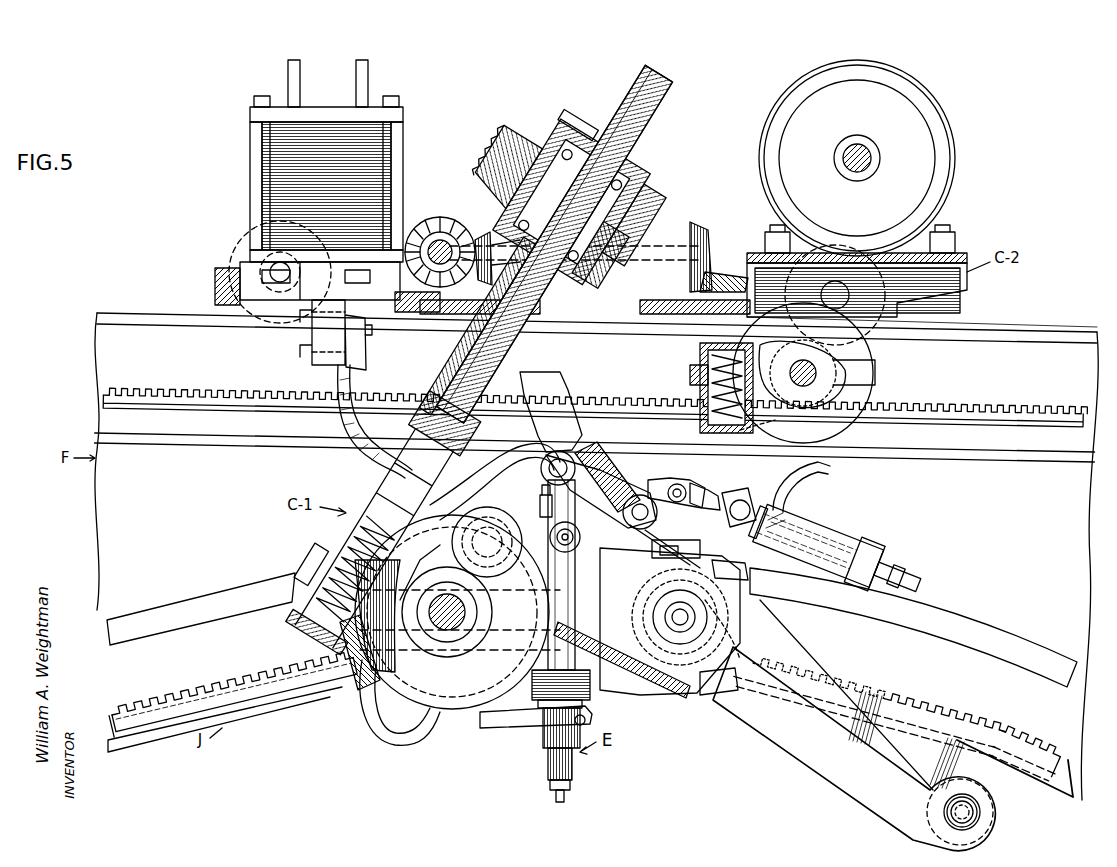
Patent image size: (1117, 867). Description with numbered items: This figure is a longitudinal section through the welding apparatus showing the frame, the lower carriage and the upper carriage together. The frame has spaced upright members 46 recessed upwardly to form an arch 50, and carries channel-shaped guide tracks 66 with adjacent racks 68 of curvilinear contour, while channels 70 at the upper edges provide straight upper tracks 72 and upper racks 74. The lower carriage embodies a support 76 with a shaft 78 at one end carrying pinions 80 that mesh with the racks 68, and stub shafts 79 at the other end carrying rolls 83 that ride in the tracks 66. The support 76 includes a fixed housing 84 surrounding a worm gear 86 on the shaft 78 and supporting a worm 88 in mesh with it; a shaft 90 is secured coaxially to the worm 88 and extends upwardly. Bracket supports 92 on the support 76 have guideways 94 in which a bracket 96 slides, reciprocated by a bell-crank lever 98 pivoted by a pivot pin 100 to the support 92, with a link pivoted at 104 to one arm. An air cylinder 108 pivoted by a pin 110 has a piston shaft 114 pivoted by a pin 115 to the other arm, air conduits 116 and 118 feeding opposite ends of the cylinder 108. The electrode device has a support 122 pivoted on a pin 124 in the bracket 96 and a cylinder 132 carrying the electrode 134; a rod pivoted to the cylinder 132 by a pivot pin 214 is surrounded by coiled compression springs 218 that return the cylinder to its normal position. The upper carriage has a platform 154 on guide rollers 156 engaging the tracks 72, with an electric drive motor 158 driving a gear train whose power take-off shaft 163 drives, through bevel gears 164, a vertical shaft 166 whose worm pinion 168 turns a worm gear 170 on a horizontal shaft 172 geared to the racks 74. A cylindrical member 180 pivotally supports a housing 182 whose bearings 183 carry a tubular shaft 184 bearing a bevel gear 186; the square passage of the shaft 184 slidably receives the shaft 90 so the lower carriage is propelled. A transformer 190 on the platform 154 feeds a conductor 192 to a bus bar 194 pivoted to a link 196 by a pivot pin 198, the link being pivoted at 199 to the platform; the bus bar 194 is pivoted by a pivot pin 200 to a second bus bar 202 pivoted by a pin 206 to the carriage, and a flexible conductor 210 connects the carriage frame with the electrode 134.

The upright members 46 is at (1092, 468).
The arch 50 is at (262, 712).
The channel-shaped guide tracks 66 is at (195, 616).
The racks 68 is at (975, 722).
The channels 70 is at (115, 362).
The upper tracks 72 is at (1024, 333).
The upper racks 74 is at (956, 404).
The support 76 is at (780, 632).
The shaft 78 is at (445, 660).
The stub shafts 79 is at (740, 600).
The pinions 80 is at (456, 560).
The rolls 83 is at (742, 628).
The fixed housing 84 is at (325, 696).
The worm gear 86 is at (340, 641).
The worm 88 is at (318, 575).
The shaft 90 is at (455, 365).
The bracket supports 92 is at (740, 565).
The guideways 94 is at (660, 538).
The bracket 96 is at (548, 624).
The bell-crank lever 98 is at (660, 492).
The pivot pin 100 is at (633, 485).
The pivot 104 is at (660, 548).
The air cylinder 108 is at (830, 537).
The pivot pin 110 is at (745, 500).
The shaft 114 is at (720, 496).
The pin 115 is at (680, 484).
The air conduit 116 is at (815, 472).
The air conduit 118 is at (918, 581).
The support 122 is at (552, 515).
The pin 124 is at (540, 505).
The cylinder 132 is at (592, 704).
The electrode 134 is at (572, 775).
The platform 154 is at (424, 330).
The guide rollers 156 is at (236, 250).
The electric drive motor 158 is at (920, 125).
The power take-off shaft 163 is at (436, 275).
The bevel gears 164 is at (440, 217).
The vertical shaft 166 is at (700, 352).
The worm pinion 168 is at (690, 373).
The worm gear 170 is at (760, 438).
The horizontal shaft 172 is at (860, 372).
The cylindrical member 180 is at (545, 128).
The housing 182 is at (505, 152).
The bearings 183 is at (665, 170).
The tubular shaft 184 is at (568, 322).
The bevel gear 186 is at (480, 178).
The transformer 190 is at (250, 188).
The conductor 192 is at (355, 468).
The bus bar 194 is at (848, 670).
The link 196 is at (575, 452).
The pivot pin 198 is at (620, 466).
The pivot 199 is at (568, 372).
The pivot pin 200 is at (980, 810).
The second bus bar 202 is at (830, 782).
The pin 206 is at (503, 455).
The flexible conductor 210 is at (392, 746).
The pivot pin 214 is at (640, 695).
The coiled compression springs 218 is at (708, 698).